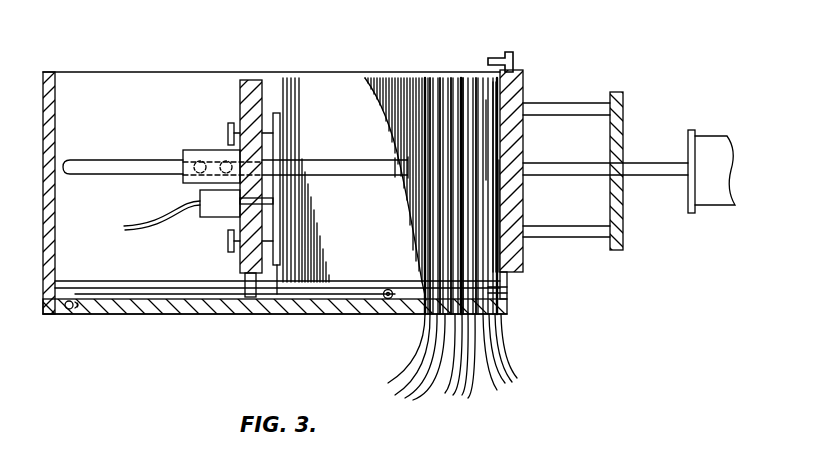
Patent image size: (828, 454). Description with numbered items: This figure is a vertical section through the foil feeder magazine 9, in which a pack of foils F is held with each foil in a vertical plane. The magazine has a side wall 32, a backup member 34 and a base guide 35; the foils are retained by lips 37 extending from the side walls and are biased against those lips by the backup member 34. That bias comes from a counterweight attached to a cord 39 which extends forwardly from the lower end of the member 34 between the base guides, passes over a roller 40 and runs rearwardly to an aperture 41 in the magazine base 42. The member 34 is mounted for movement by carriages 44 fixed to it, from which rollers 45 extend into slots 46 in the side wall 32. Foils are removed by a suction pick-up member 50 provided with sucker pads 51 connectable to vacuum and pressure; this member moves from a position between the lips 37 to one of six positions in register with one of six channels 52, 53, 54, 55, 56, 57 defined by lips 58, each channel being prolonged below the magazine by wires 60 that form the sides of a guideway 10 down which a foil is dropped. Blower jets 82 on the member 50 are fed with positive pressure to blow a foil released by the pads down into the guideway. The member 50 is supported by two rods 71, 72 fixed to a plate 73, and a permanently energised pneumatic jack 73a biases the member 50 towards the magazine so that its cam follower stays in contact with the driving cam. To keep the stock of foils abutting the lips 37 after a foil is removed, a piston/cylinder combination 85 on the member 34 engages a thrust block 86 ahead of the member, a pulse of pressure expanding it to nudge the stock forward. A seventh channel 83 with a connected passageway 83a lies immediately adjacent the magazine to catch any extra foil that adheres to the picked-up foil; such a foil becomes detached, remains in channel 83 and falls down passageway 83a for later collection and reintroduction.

The magazine 9 is at (339, 318).
The guideway 10 is at (470, 398).
The side wall 32 is at (196, 75).
The backup member 34 is at (250, 80).
The base guide 35 is at (111, 281).
The lips 37 is at (425, 78).
The cord 39 is at (183, 300).
The roller 40 is at (386, 300).
The aperture 41 is at (71, 333).
The magazine base 42 is at (235, 306).
The carriage 44 is at (183, 151).
The rollers 45 is at (224, 160).
The slot 46 is at (98, 165).
The suction pick-up member 50 is at (523, 80).
The sucker pads 51 is at (497, 95).
The channel 52 is at (440, 78).
The channel 53 is at (451, 78).
The channel 54 is at (464, 78).
The channel 55 is at (476, 78).
The channel 56 is at (488, 121).
The channel 57 is at (500, 191).
The lips 58 is at (507, 294).
The wires 60 is at (490, 360).
The rod 71 is at (598, 103).
The rod 72 is at (567, 240).
The plate 73 is at (623, 125).
The pneumatic jack 73a is at (712, 140).
The blower jets 82 is at (515, 58).
The seventh channel 83 is at (430, 78).
The passageway 83a is at (415, 353).
The piston/cylinder combination 85 is at (215, 211).
The thrust block 86 is at (277, 300).
The foil F is at (292, 78).